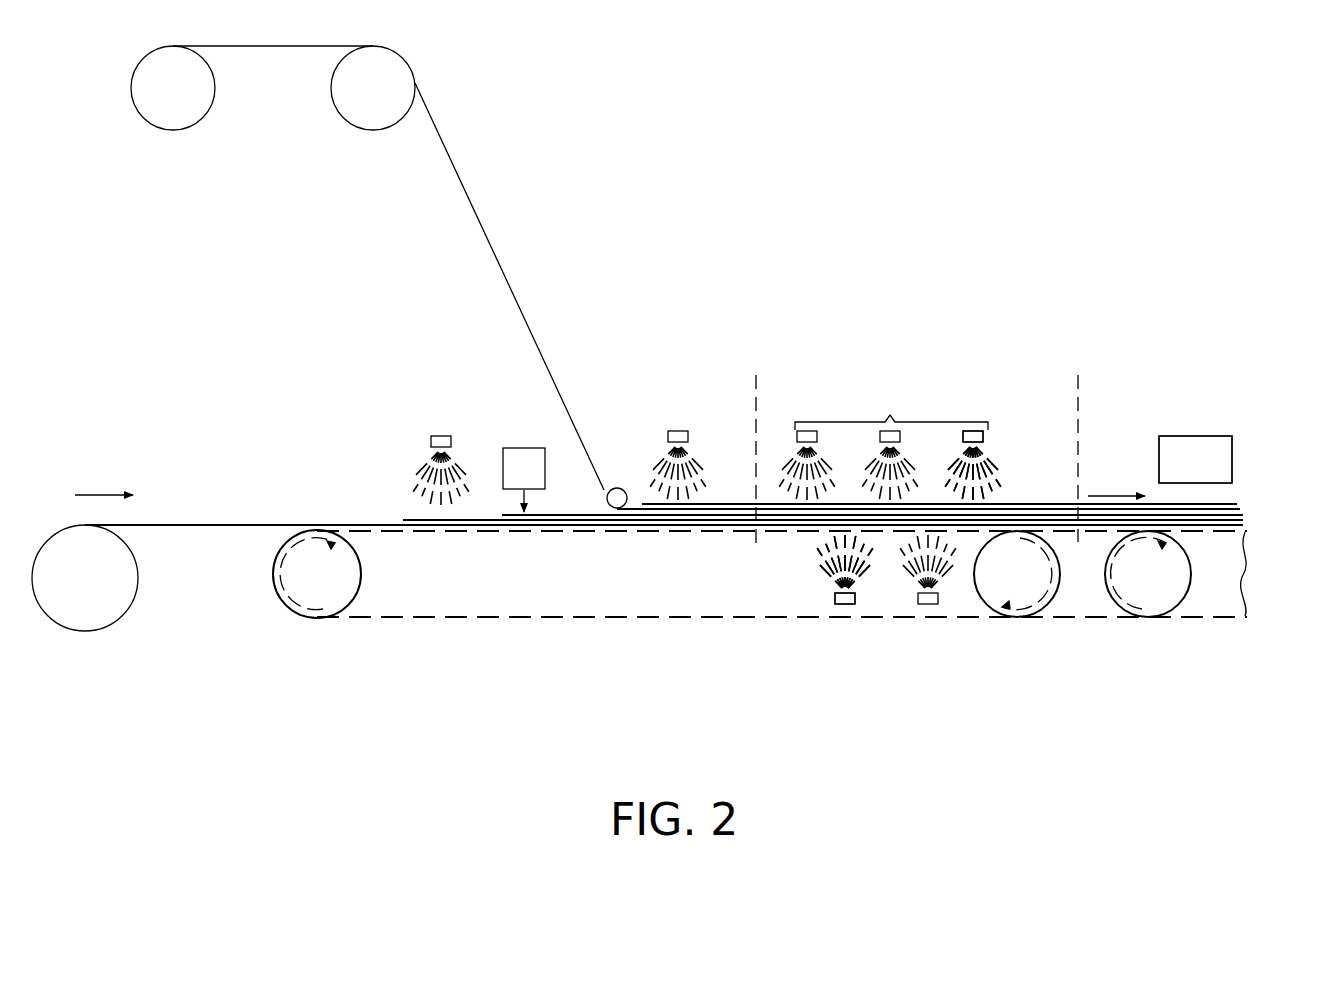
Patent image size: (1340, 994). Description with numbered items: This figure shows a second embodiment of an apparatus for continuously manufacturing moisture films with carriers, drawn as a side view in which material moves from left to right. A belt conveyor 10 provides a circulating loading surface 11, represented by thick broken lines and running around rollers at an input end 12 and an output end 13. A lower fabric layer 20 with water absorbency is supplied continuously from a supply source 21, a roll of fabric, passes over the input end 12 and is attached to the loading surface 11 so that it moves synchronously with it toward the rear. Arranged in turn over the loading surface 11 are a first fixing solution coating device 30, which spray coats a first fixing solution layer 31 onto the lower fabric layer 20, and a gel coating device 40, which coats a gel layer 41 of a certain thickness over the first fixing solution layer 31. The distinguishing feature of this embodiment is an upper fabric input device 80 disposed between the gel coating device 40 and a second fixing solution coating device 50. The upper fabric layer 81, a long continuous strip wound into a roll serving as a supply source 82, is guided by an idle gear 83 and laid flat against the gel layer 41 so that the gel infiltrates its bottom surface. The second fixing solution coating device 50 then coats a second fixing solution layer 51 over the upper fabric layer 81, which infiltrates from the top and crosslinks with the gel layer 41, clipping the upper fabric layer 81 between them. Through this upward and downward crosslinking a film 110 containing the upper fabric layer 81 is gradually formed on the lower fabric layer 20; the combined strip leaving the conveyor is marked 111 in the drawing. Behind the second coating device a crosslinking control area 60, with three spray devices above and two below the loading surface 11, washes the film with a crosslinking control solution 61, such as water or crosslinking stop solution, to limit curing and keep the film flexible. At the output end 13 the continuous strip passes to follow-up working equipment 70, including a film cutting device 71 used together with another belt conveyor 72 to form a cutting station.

The belt conveyor 10 is at (660, 617).
The loading surface 11 is at (484, 533).
The input end 12 is at (372, 533).
The output end 13 is at (970, 534).
The lower fabric layer 20 is at (222, 523).
The supply source 21 is at (84, 611).
The first fixing solution coating device 30 is at (441, 436).
The first fixing solution layer 31 is at (420, 465).
The gel coating device 40 is at (524, 449).
The gel layer 41 is at (549, 516).
The second fixing solution coating device 50 is at (678, 432).
The second fixing solution layer 51 is at (696, 467).
The crosslinking control area 60 is at (880, 690).
The crosslinking control solution 61 is at (993, 459).
The follow-up working equipment 70 is at (1243, 426).
The film cutting device 71 is at (1221, 460).
The belt conveyor 72 is at (1228, 570).
The upper fabric input device 80 is at (527, 183).
The upper fabric layer 81 is at (621, 508).
The supply source 82 is at (172, 130).
The idle gear 83 is at (353, 128).
The film 110 is at (759, 397).
The second laminate 111 is at (1081, 396).